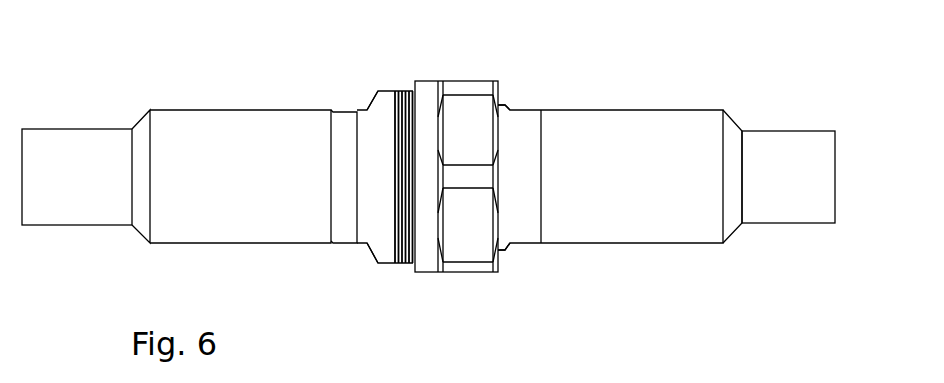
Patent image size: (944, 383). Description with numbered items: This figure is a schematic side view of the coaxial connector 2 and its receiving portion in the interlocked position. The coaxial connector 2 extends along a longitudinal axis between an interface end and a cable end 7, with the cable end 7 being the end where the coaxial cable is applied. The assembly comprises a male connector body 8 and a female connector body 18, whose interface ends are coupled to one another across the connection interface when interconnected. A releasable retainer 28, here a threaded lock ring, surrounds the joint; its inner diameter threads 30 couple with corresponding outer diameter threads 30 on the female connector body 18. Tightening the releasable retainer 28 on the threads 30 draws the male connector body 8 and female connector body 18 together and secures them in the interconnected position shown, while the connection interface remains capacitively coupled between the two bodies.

The coaxial connector 2 is at (355, 261).
The cable end 7 is at (823, 0).
The male connector body 8 is at (515, 128).
The female connector body 18 is at (377, 128).
The releasable retainer 28 is at (477, 98).
The threads 30 is at (400, 91).